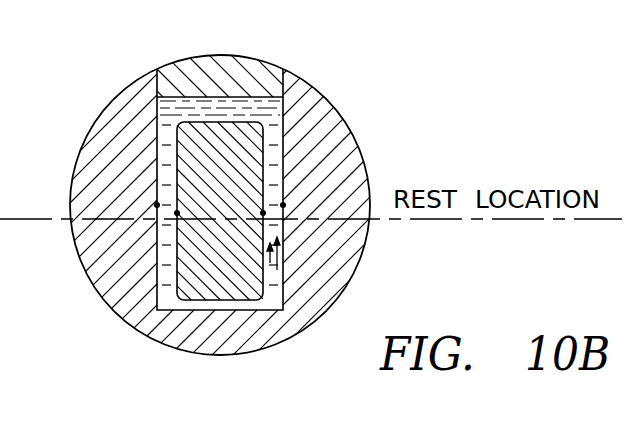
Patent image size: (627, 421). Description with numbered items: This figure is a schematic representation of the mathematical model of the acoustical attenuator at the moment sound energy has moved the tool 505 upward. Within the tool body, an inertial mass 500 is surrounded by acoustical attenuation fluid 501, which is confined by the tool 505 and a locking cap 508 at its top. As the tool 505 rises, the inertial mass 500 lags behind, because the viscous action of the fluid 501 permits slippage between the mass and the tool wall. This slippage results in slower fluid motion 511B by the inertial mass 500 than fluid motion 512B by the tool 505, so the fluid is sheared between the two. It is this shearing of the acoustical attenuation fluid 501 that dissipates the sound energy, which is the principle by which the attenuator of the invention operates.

The inertial mass 500 is at (257, 145).
The acoustical attenuation fluid 501 is at (163, 153).
The tool 505 is at (110, 297).
The locking cap 508 is at (219, 62).
The fluid motion by the inertial mass 511B is at (290, 257).
The fluid motion by the tool 512B is at (290, 257).